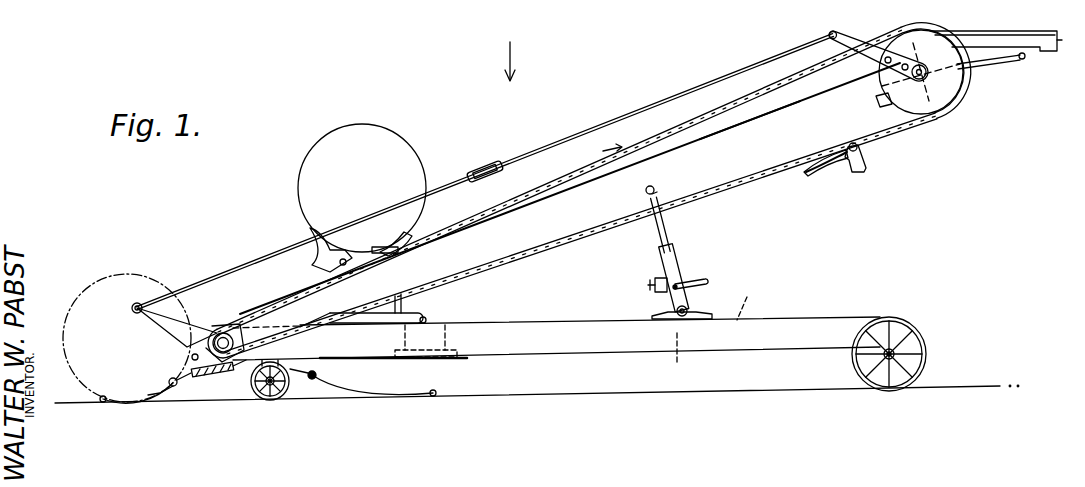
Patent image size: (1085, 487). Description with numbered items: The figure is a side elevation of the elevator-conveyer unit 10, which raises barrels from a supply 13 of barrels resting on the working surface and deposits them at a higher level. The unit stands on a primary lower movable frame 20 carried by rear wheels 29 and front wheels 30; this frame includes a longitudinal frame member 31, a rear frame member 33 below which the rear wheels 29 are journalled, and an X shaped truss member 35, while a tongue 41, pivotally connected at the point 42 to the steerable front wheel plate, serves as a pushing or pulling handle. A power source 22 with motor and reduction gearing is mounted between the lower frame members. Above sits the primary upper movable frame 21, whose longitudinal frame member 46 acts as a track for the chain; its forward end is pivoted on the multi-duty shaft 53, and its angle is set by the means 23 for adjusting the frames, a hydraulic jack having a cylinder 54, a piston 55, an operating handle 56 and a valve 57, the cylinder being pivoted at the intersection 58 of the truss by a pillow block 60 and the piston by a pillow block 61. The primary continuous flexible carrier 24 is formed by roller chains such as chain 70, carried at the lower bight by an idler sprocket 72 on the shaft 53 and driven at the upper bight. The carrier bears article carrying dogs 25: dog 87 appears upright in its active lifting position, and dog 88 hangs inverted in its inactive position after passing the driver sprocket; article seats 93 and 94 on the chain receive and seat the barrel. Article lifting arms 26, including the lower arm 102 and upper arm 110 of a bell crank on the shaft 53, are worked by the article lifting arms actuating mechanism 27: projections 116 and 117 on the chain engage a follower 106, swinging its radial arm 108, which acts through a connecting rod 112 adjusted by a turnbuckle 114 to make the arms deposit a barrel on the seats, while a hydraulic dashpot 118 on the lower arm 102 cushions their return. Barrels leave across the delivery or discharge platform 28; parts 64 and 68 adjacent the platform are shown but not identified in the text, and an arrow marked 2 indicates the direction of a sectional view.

The section line 2 is at (517, 61).
The elevator-conveyer unit 10 is at (698, 116).
The supply of barrels 13 is at (380, 133).
The primary lower movable frame 20 is at (777, 320).
The primary upper movable frame 21 is at (729, 131).
The power source 22 is at (445, 317).
The means to adjust the interrelation of the frames 23 is at (682, 250).
The primary continuous flexible carrier 24 is at (577, 241).
The article carrying dogs 25 is at (836, 177).
The article lifting arms 26 is at (163, 394).
The article lifting arms actuating mechanism 27 is at (771, 60).
The delivery or discharge platform 28 is at (993, 33).
The rear wheels 29 is at (923, 370).
The front wheels 30 is at (268, 400).
The longitudinal frame member 31 is at (598, 352).
The rear frame member 33 is at (897, 330).
The X shaped truss member 35 is at (751, 299).
The tongue 41 is at (377, 392).
The pivot point 42 is at (313, 380).
The longitudinal frame member 46 is at (765, 116).
The multi-duty shaft 53 is at (227, 333).
The cylinder 54 is at (657, 262).
The piston 55 is at (665, 225).
The operating handle 56 is at (710, 280).
The valve 57 is at (650, 287).
The intersection 58 is at (689, 354).
The pillow block 60 is at (658, 315).
The pillow block 61 is at (641, 193).
The hook 64 is at (1017, 32).
The link rod 68 is at (993, 68).
The chain 70 is at (568, 176).
The idler sprocket 72 is at (243, 336).
The article carrying dog 87 is at (314, 267).
The article carrying dog 88 is at (870, 158).
The article seats 93 is at (432, 217).
The article seats 94 is at (810, 161).
The lower arm of bell-crank 102 is at (180, 393).
The follower 106 is at (955, 107).
The radial arm 108 is at (853, 45).
The upper arm of bell crank 110 is at (167, 320).
The connecting rod 112 is at (602, 124).
The turnbuckle 114 is at (490, 166).
The projection 116 is at (433, 237).
The projection 117 is at (804, 158).
The hydraulic dashpot 118 is at (209, 381).